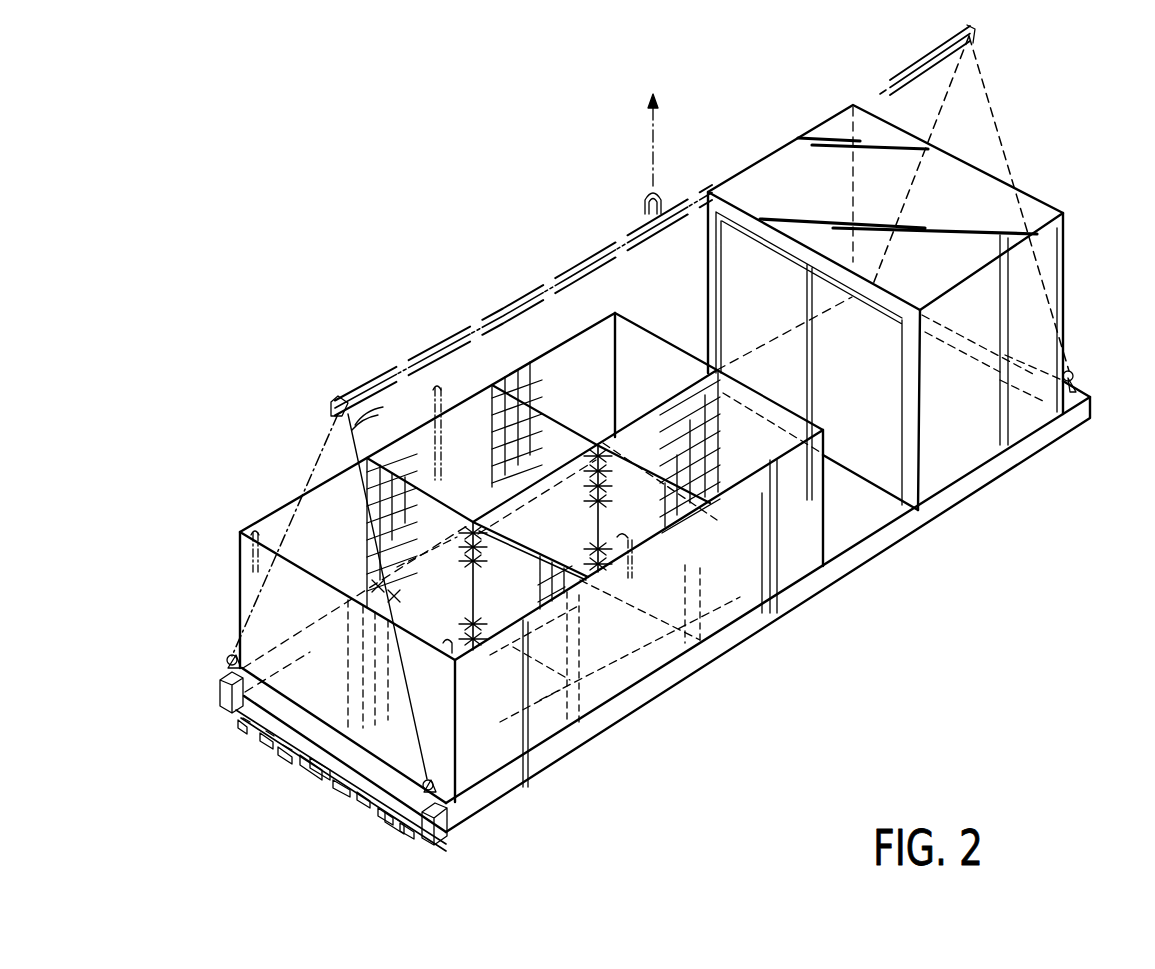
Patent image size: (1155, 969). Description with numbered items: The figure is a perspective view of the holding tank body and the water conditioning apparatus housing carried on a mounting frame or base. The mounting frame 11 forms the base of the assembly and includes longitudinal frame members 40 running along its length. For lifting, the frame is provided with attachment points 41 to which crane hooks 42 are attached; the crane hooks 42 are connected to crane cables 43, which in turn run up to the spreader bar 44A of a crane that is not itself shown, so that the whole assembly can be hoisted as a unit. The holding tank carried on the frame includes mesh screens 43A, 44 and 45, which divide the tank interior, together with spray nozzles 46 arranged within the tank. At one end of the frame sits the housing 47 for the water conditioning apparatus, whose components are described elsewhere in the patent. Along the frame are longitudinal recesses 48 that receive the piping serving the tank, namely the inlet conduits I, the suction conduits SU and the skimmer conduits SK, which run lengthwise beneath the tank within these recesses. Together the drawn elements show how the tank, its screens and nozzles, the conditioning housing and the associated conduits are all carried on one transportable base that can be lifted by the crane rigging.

The mounting frame 11 is at (638, 710).
The longitudinal frame members 40 is at (220, 693).
The attachment points 41 is at (232, 683).
The crane hooks 42 is at (232, 660).
The crane cables 43 is at (374, 412).
The mesh screen 43A is at (538, 405).
The mesh screen 44 is at (440, 503).
The spreader bar 44A is at (490, 318).
The mesh screen 45 is at (661, 407).
The spray nozzles 46 is at (441, 418).
The housing 47 is at (773, 167).
The longitudinal recesses 48 is at (297, 762).
The inlet conduits I is at (243, 723).
The suction conduits SU is at (265, 740).
The skimmer conduits SK is at (295, 757).